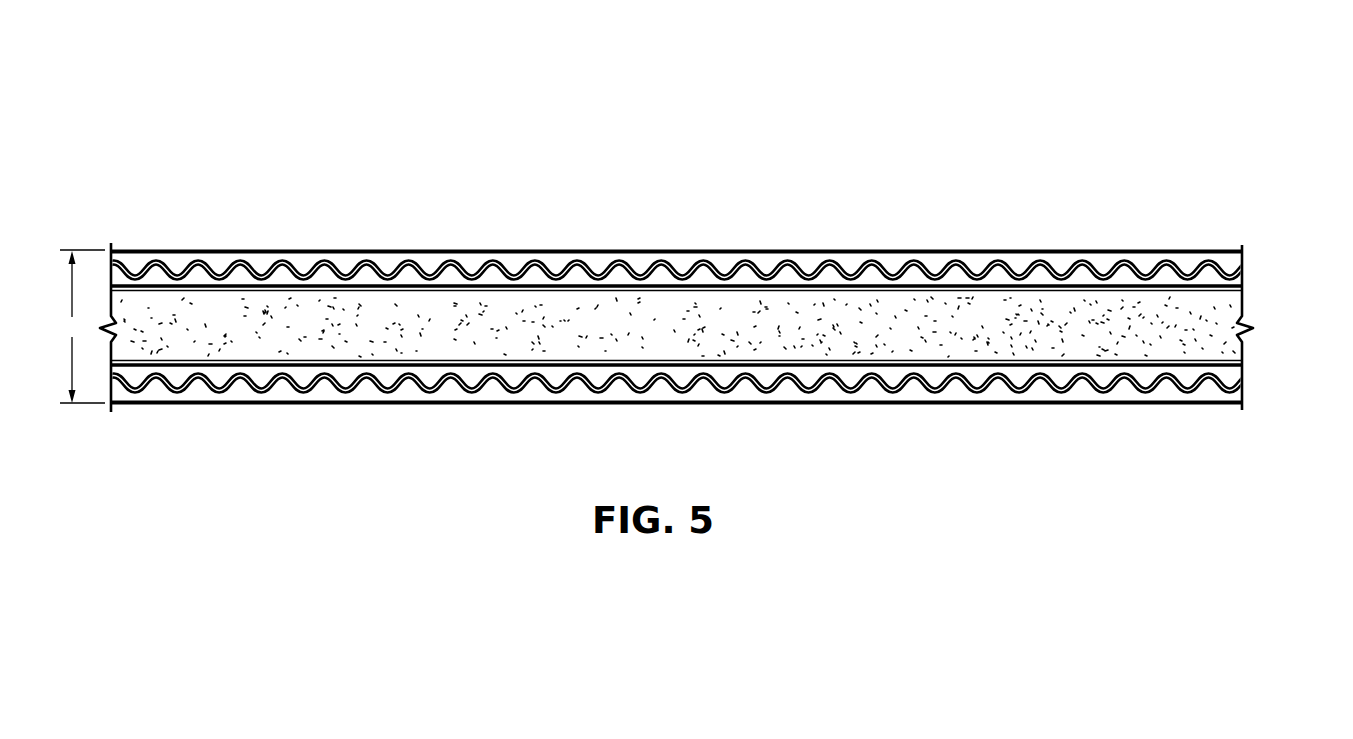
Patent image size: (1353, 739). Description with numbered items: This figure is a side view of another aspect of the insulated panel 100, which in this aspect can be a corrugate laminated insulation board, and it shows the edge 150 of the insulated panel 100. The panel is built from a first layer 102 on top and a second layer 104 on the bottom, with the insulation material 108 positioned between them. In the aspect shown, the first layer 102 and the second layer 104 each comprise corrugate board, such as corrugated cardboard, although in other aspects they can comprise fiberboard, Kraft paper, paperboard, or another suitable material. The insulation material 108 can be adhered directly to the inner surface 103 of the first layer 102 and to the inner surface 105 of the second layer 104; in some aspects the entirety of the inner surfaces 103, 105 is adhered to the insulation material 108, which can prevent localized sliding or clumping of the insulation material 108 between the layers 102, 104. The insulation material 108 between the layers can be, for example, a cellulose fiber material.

The insulated panel 100 is at (544, 76).
The first layer 102 is at (345, 249).
The inner surface of the first layer 103 is at (1214, 292).
The second layer 104 is at (360, 402).
The inner surface of the second layer 105 is at (1218, 360).
The insulation material 108 is at (963, 316).
The edge 150 is at (512, 313).